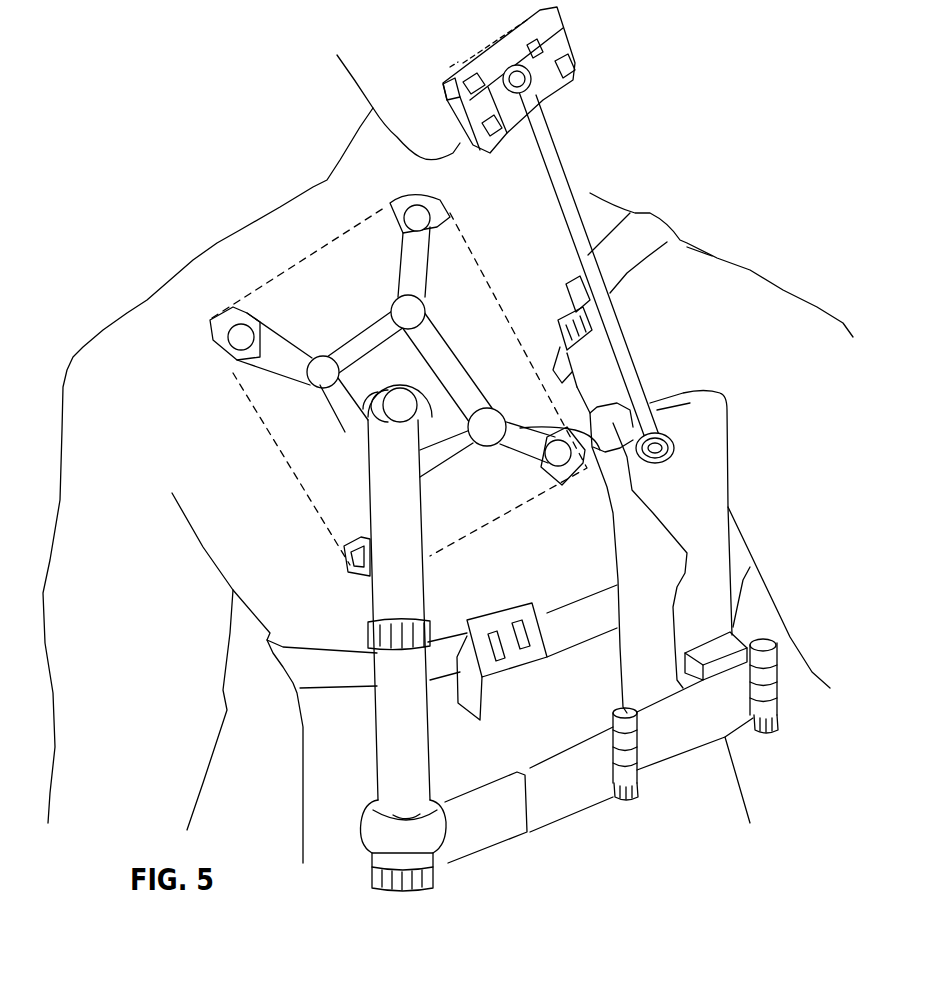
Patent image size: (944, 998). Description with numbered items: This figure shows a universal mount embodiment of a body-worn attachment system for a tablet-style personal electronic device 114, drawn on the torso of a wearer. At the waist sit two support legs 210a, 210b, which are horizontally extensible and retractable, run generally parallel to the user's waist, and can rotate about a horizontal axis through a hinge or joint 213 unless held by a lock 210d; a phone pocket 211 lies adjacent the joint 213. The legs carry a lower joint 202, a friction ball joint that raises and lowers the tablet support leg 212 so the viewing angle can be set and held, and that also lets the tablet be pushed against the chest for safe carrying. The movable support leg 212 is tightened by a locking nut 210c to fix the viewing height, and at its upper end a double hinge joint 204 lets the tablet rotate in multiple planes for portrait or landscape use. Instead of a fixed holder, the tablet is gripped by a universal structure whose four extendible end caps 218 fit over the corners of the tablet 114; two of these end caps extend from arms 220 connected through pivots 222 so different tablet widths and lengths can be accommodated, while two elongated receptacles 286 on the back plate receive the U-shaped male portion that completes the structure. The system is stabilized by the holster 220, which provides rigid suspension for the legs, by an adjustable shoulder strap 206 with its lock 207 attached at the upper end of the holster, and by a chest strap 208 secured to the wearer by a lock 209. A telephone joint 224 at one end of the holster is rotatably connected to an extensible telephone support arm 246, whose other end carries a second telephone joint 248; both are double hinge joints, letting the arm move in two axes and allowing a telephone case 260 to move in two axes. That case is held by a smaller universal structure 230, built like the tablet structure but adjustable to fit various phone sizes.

The tablet-style personal electronic device 114 is at (336, 455).
The lower joint 202 is at (403, 826).
The double hinge joint 204 is at (397, 395).
The shoulder strap 206 is at (687, 226).
The lock 207 is at (558, 331).
The chest strap 208 is at (442, 636).
The lock 209 is at (467, 661).
The support leg 210a is at (529, 795).
The support leg 210b is at (695, 725).
The locking nut 210c is at (377, 632).
The lock 210d is at (575, 816).
The phone pocket 211 is at (714, 651).
The tablet support leg 212 is at (399, 610).
The joint 213 is at (690, 711).
The end cap 218 is at (217, 333).
The arm / holster 220 is at (662, 576).
The pivot 222 is at (324, 405).
The telephone joint 224 is at (658, 457).
The universal structure 230 is at (556, 17).
The telephone support arm 246 is at (589, 265).
The telephone joint 248 is at (528, 90).
The telephone case 260 is at (512, 52).
The elongated receptacle 286 is at (451, 356).